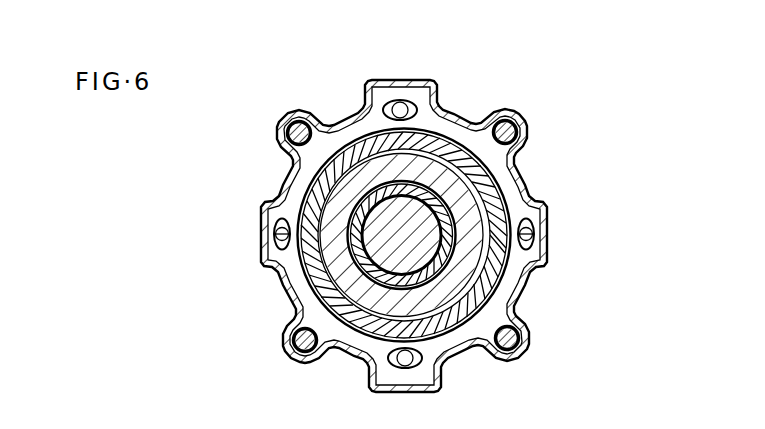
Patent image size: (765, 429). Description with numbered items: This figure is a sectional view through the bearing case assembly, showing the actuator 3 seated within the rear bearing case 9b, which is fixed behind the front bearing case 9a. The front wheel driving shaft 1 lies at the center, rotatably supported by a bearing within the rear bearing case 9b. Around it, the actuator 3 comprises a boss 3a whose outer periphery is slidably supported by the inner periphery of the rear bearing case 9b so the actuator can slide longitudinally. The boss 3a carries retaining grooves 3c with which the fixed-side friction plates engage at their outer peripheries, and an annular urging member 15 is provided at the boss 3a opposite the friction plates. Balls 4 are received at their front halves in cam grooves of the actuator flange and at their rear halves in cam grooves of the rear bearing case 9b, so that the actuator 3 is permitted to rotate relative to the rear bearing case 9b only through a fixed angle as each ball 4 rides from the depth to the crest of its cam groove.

The front wheel driving shaft 1 is at (392, 249).
The actuator 3 is at (432, 122).
The boss 3a is at (445, 142).
The retaining grooves 3c is at (493, 198).
The balls 4 is at (399, 103).
The front bearing case 9a is at (463, 193).
The rear bearing case 9b is at (303, 120).
The annular urging member 15 is at (452, 281).